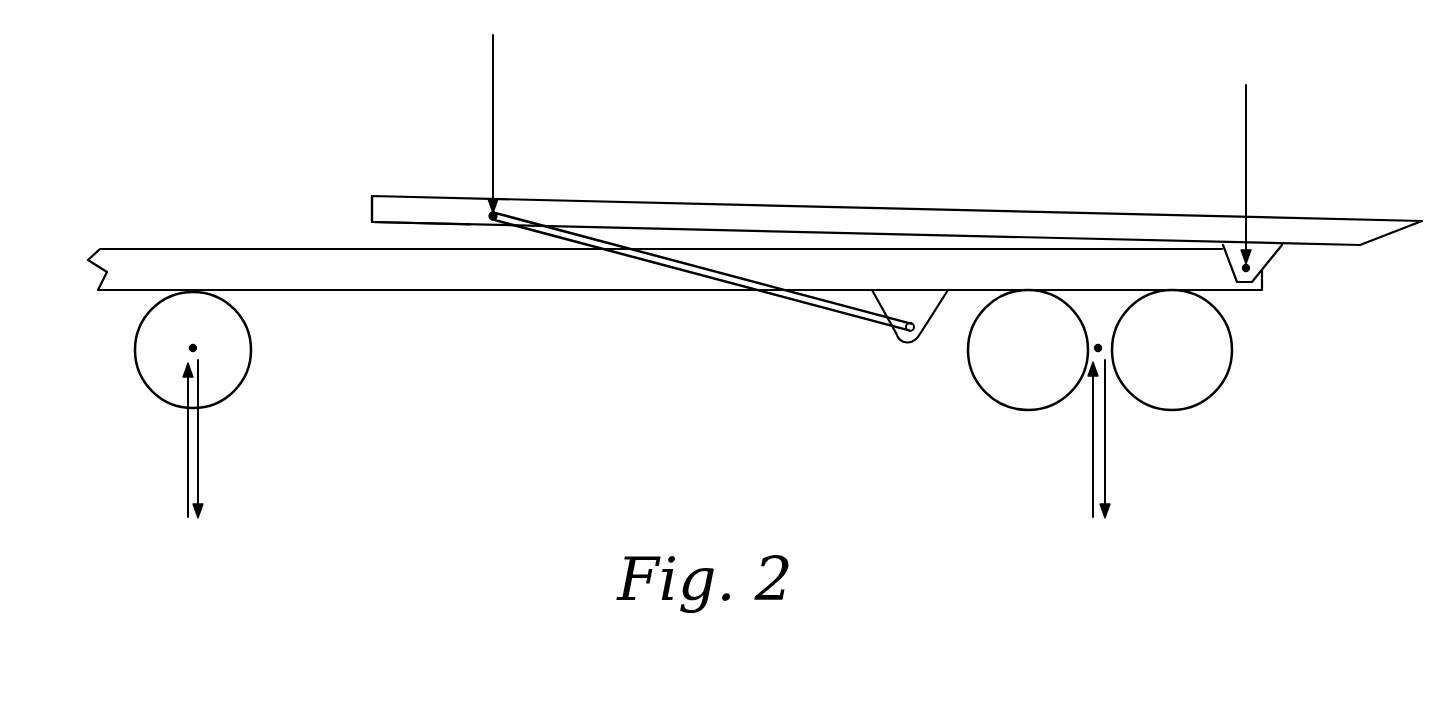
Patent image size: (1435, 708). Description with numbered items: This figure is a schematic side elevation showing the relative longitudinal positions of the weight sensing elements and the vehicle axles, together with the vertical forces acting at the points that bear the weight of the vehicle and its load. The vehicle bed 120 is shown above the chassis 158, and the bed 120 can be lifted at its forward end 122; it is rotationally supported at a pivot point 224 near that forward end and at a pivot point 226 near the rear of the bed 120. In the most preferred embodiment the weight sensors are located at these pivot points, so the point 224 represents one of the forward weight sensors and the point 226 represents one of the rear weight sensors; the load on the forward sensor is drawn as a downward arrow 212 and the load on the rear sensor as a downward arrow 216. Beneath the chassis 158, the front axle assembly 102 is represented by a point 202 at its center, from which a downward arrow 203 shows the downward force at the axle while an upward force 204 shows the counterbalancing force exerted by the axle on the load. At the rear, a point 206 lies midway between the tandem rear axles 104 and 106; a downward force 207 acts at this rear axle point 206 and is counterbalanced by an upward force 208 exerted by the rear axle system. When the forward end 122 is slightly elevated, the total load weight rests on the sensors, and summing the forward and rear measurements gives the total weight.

The front axle assembly 102 is at (255, 379).
The rear axle 104 is at (972, 380).
The rear axle 106 is at (1222, 380).
The bed 120 is at (597, 212).
The forward end 122 is at (385, 207).
The chassis frame 158 is at (528, 275).
The point 202 is at (193, 348).
The downward arrow 203 is at (200, 468).
The upward force 204 is at (186, 425).
The rear axle point 206 is at (1098, 348).
The downward force 207 is at (1106, 460).
The upward force 208 is at (1091, 432).
The downward arrow 212 is at (493, 131).
The downward arrow 216 is at (1246, 160).
The pivot point 224 is at (489, 216).
The pivot point 226 is at (1262, 275).